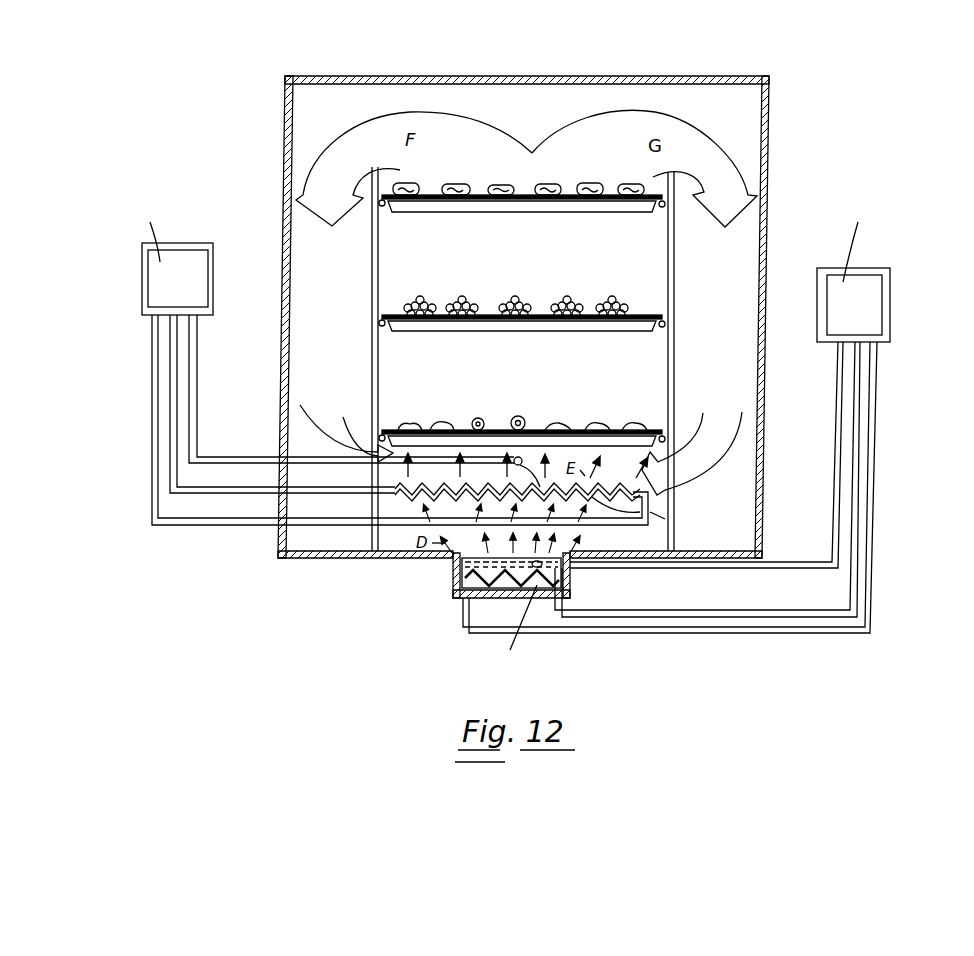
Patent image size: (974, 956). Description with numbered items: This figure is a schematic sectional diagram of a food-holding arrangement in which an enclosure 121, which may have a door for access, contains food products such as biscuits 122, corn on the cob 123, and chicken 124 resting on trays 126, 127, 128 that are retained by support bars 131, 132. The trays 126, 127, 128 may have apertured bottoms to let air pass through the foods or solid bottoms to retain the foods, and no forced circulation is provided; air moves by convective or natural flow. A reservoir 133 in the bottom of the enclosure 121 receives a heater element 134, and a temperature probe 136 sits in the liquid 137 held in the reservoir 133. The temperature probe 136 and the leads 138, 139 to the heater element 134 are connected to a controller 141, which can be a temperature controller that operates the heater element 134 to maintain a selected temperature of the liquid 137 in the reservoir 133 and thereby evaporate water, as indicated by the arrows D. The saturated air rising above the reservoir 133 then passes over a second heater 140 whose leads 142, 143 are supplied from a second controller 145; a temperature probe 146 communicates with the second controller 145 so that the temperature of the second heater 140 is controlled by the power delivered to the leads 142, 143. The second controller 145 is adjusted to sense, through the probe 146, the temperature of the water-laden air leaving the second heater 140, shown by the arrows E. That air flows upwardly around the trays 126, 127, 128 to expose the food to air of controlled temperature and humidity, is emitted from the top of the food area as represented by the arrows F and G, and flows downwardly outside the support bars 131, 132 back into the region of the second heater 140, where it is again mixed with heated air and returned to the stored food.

The enclosure 121 is at (771, 148).
The biscuits 122 is at (592, 192).
The corn on the cob 123 is at (620, 300).
The chicken 124 is at (602, 427).
The tray 126 is at (534, 206).
The tray 127 is at (524, 323).
The tray 128 is at (648, 440).
The support bar 131 is at (678, 259).
The support bar 132 is at (371, 240).
The reservoir 133 is at (452, 590).
The heater element 134 is at (462, 598).
The temperature probe 136 is at (537, 562).
The liquid 137 is at (451, 566).
The lead 138 is at (635, 633).
The lead 139 is at (690, 609).
The second heater 140 is at (406, 493).
The controller 141 is at (883, 290).
The lead 142 is at (250, 527).
The lead 143 is at (222, 493).
The second controller 145 is at (190, 258).
The temperature probe 146 is at (245, 444).